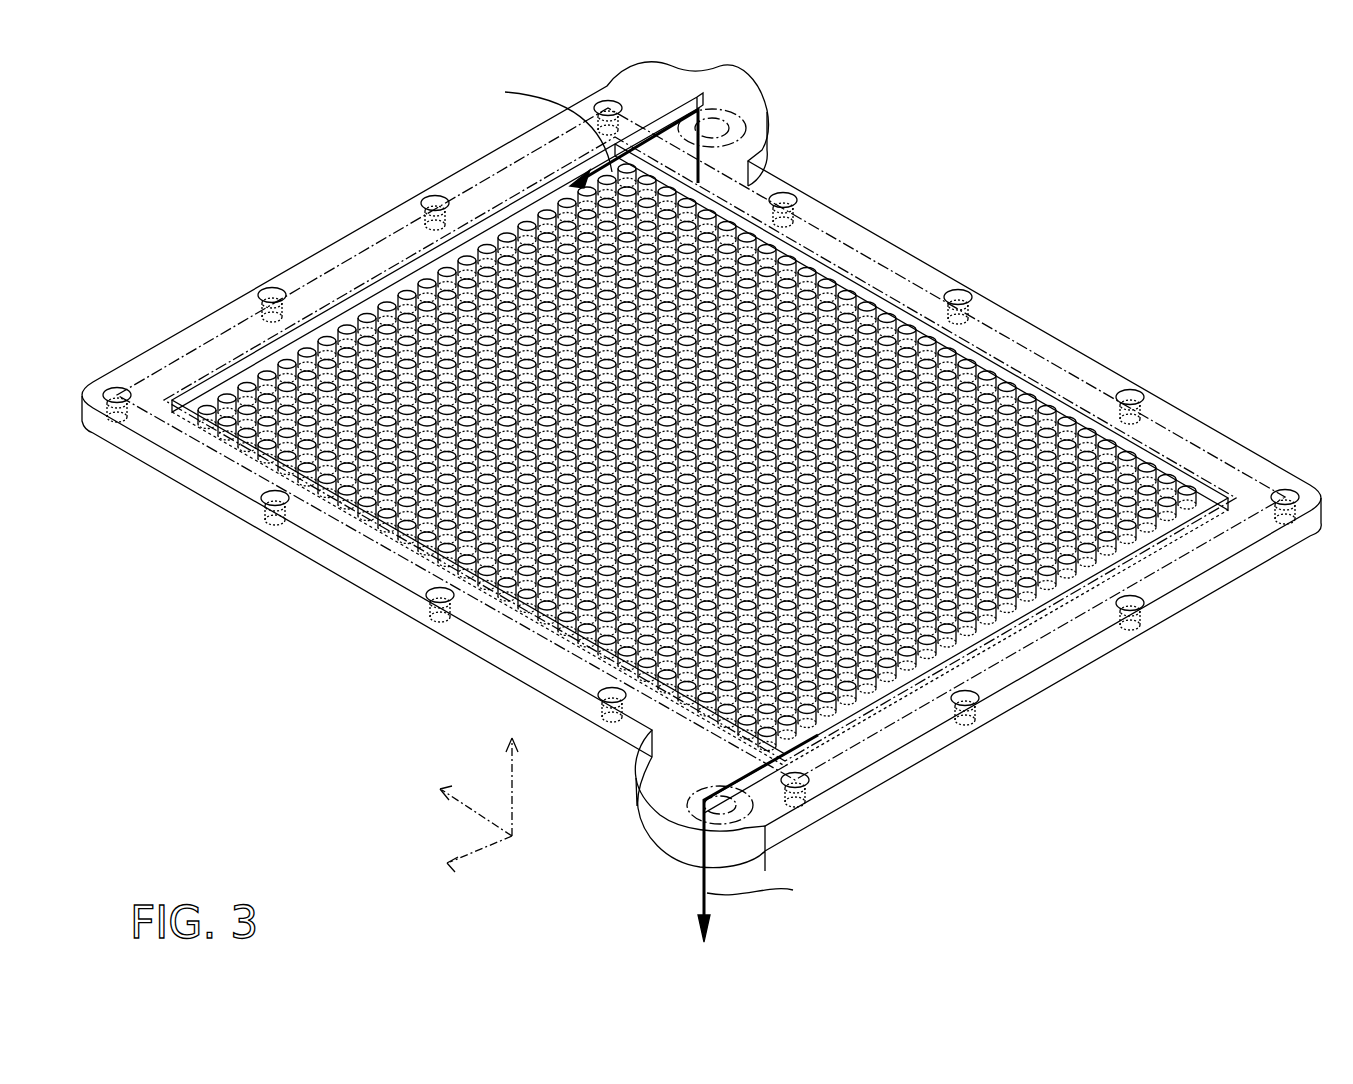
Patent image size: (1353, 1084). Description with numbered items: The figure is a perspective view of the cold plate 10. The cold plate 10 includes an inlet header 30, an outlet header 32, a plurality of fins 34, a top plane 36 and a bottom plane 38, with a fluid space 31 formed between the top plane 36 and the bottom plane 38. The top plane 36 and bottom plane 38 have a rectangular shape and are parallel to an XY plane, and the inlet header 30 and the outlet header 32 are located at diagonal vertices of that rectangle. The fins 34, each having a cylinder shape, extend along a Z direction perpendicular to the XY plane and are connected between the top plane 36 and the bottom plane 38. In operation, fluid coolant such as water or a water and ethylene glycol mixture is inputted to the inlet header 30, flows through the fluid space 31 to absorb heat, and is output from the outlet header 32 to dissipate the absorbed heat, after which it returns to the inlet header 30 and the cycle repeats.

The cold plate 10 is at (1068, 203).
The inlet header 30 is at (722, 116).
The fluid space 31 is at (335, 322).
The outlet header 32 is at (672, 838).
The fins 34 is at (1030, 388).
The top plane 36 is at (403, 258).
The bottom plane 38 is at (222, 378).